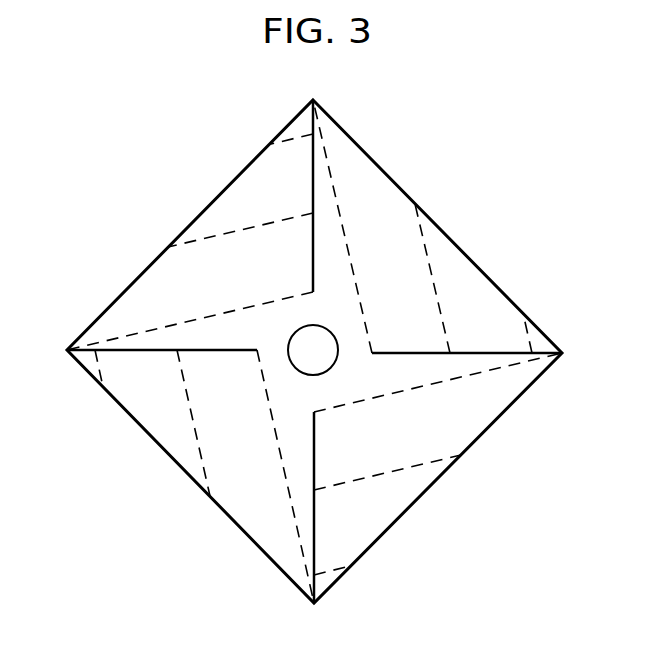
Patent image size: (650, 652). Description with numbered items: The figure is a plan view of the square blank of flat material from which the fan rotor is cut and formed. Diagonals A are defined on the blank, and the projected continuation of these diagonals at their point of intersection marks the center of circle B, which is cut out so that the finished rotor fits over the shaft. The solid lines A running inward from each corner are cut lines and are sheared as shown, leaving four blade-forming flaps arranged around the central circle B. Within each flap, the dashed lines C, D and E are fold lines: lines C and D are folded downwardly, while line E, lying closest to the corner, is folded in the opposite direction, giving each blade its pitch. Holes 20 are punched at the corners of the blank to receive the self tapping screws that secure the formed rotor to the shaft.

The holes 20 is at (296, 117).
The cut lines A is at (312, 265).
The circle B is at (313, 350).
The fold line C is at (153, 328).
The fold line D is at (245, 230).
The fold line E is at (300, 137).